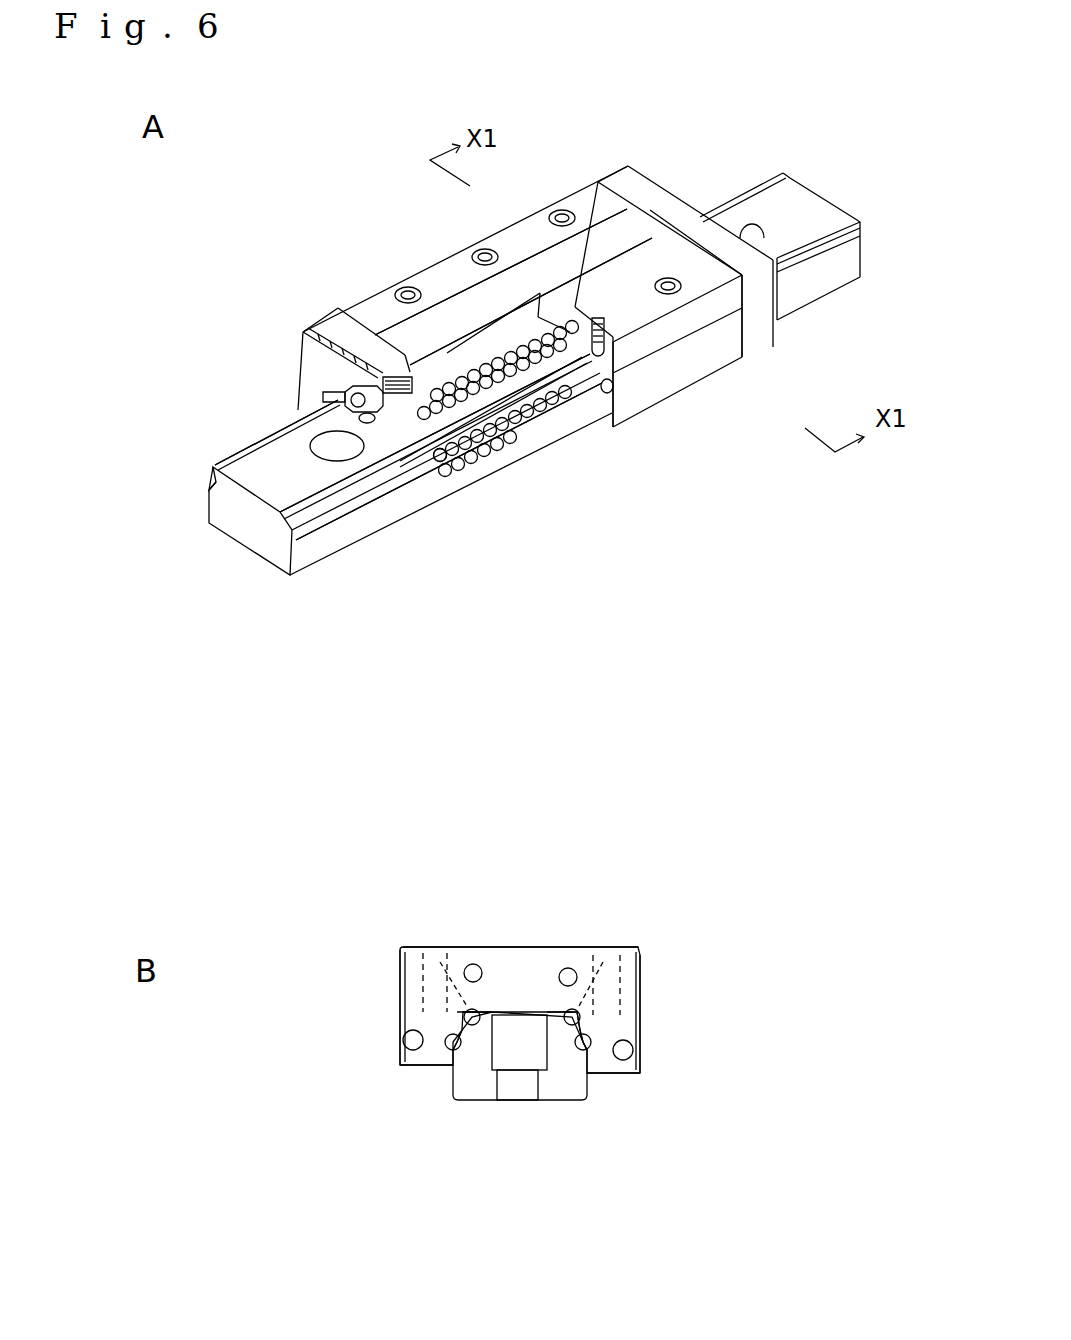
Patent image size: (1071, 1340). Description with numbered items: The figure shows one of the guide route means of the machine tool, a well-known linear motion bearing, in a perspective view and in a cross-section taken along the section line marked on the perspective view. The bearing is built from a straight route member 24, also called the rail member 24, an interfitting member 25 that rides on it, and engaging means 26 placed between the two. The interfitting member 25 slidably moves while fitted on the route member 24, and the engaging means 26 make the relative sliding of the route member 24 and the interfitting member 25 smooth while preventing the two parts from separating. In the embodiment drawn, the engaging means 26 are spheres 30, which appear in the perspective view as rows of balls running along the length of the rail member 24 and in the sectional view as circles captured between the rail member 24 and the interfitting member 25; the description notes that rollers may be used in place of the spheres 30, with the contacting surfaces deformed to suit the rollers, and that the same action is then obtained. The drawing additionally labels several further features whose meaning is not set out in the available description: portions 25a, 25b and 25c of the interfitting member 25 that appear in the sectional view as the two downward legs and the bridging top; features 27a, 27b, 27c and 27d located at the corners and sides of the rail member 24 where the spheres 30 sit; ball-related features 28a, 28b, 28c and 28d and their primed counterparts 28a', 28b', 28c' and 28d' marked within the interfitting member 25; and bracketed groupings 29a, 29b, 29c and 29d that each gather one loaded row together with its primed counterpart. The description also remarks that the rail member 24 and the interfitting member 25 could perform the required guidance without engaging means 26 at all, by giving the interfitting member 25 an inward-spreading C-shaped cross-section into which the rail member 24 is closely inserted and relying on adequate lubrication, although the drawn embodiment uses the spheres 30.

In FIG. 6A, the straight route member 24 is at (254, 566).
In FIG. 6B, the straight route member 24 is at (473, 1117).
In FIG. 6A, the interfitting member 25 is at (412, 250).
In FIG. 6B, the interfitting member 25 is at (486, 902).
In FIG. 6A, the first leg portion of slider 25a is at (355, 300).
In FIG. 6B, the first leg portion of slider 25a is at (392, 1007).
In FIG. 6A, the second leg portion of slider 25b is at (673, 350).
In FIG. 6B, the second leg portion of slider 25b is at (640, 1020).
In FIG. 6A, the horizontal (top) portion of slider 25c is at (455, 352).
In FIG. 6B, the horizontal (top) portion of slider 25c is at (525, 946).
In FIG. 6A, the engaging means 26 is at (443, 470).
In FIG. 6A, the ball rolling groove 27a is at (210, 484).
In FIG. 6B, the ball rolling groove 27a is at (457, 1067).
In FIG. 6A, the ball rolling groove 27b is at (297, 537).
In FIG. 6B, the ball rolling groove 27b is at (584, 1077).
In FIG. 6A, the ball rolling groove 27c is at (250, 452).
In FIG. 6B, the ball rolling groove 27c is at (460, 1012).
In FIG. 6A, the ball rolling groove 27d is at (328, 484).
In FIG. 6B, the ball rolling groove 27d is at (600, 1018).
In FIG. 6B, the loaded ball row 28a is at (371, 1087).
In FIG. 6A, the loaded ball row 28b is at (579, 444).
In FIG. 6B, the loaded ball row 28b is at (621, 1105).
In FIG. 6B, the loaded ball row 28c is at (417, 949).
In FIG. 6A, the loaded ball row 28d is at (574, 254).
In FIG. 6B, the loaded ball row 28d is at (634, 953).
In FIG. 6B, the ball return passage 28a' is at (347, 1059).
In FIG. 6A, the ball return passage 28b' is at (559, 465).
In FIG. 6B, the ball return passage 28b' is at (672, 1108).
In FIG. 6B, the ball return passage 28c' is at (435, 927).
In FIG. 6A, the ball return passage 28d' is at (526, 253).
In FIG. 6B, the ball return passage 28d' is at (624, 929).
In FIG. 6B, the ball circulation path 29a is at (295, 1227).
In FIG. 6A, the ball circulation path 29b is at (747, 497).
In FIG. 6B, the ball circulation path 29b is at (727, 1177).
In FIG. 6B, the ball circulation path 29c is at (386, 818).
In FIG. 6A, the ball circulation path 29d is at (737, 76).
In FIG. 6B, the ball circulation path 29d is at (745, 945).
In FIG. 6A, the spheres 30 is at (537, 438).